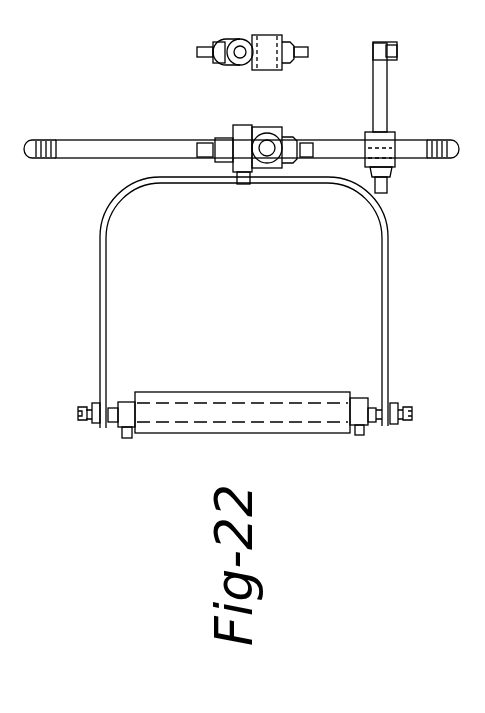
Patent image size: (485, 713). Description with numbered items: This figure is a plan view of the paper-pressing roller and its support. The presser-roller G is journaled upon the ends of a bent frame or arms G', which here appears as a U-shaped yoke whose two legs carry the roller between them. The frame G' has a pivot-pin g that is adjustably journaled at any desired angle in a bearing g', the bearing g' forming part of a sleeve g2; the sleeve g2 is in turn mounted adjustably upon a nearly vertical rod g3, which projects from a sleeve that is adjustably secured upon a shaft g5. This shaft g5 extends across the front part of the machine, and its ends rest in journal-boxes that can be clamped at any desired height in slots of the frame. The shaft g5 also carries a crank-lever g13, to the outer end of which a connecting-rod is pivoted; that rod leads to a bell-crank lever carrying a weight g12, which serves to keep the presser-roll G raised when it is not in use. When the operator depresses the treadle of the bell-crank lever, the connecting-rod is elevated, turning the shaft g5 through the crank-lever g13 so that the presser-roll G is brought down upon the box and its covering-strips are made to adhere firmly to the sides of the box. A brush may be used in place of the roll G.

The pivot-pin g is at (248, 164).
The bearing g' is at (218, 84).
The sleeve g2 is at (286, 130).
The nearly vertical rod g3 is at (267, 140).
The shaft g5 is at (241, 136).
The weight g12 is at (383, 38).
The crank-lever g13 is at (382, 118).
The presser-roller G is at (245, 401).
The bent frame or arms G' is at (229, 302).